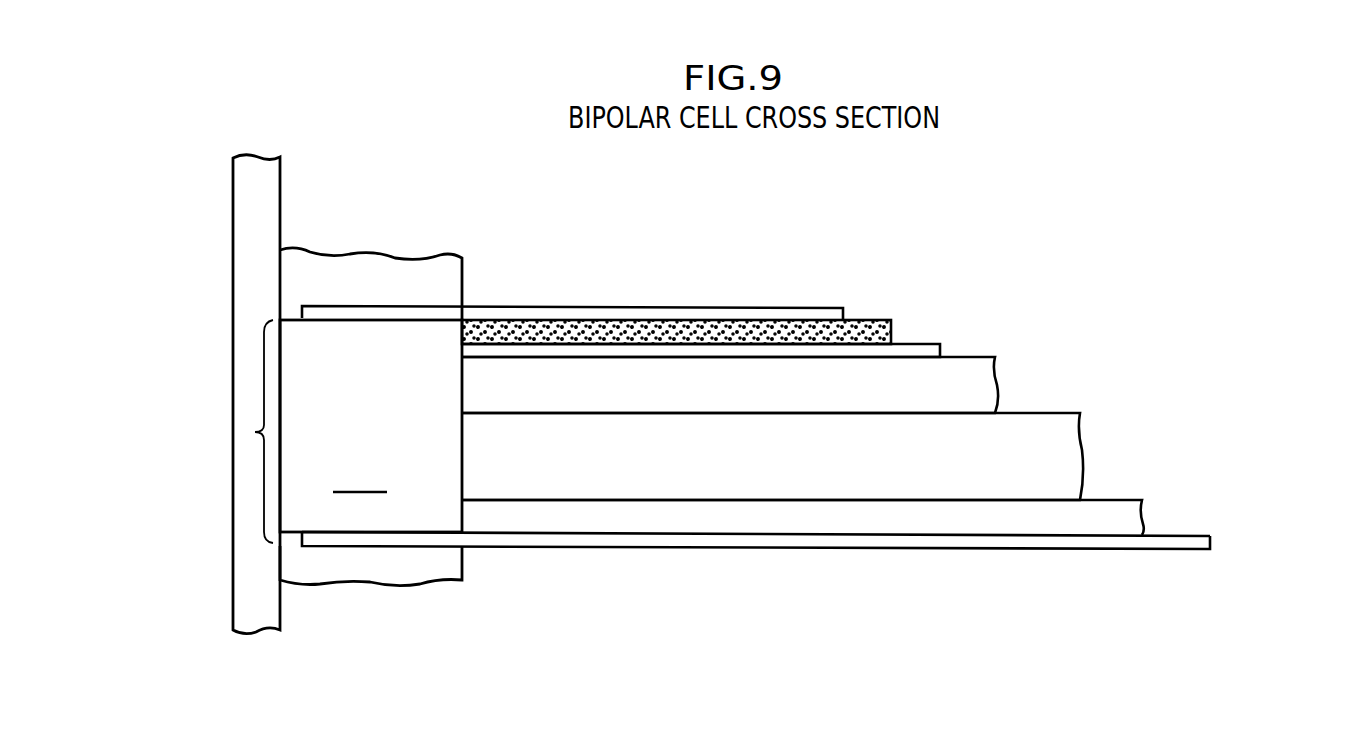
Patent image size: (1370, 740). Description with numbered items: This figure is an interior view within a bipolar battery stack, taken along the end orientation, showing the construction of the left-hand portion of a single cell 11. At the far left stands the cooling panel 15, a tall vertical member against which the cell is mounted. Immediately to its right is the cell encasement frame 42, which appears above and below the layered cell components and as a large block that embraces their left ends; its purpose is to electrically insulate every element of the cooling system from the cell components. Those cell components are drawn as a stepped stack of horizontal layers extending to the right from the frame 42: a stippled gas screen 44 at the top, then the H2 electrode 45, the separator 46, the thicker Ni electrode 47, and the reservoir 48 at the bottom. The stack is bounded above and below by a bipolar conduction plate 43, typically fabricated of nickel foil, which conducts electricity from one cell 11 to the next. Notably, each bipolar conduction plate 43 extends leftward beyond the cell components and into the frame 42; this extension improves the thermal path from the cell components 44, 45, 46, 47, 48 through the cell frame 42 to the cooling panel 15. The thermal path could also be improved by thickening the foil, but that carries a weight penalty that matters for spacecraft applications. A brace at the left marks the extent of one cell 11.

The cell 11 is at (255, 432).
The panel 15 is at (263, 199).
The cell encasement frame 42 is at (438, 286).
The bipolar conduction plate 43 is at (914, 598).
The gas screen 44 is at (888, 326).
The H2 electrode 45 is at (945, 348).
The separator 46 is at (988, 394).
The Ni electrode 47 is at (1065, 458).
The reservoir 48 is at (1122, 514).